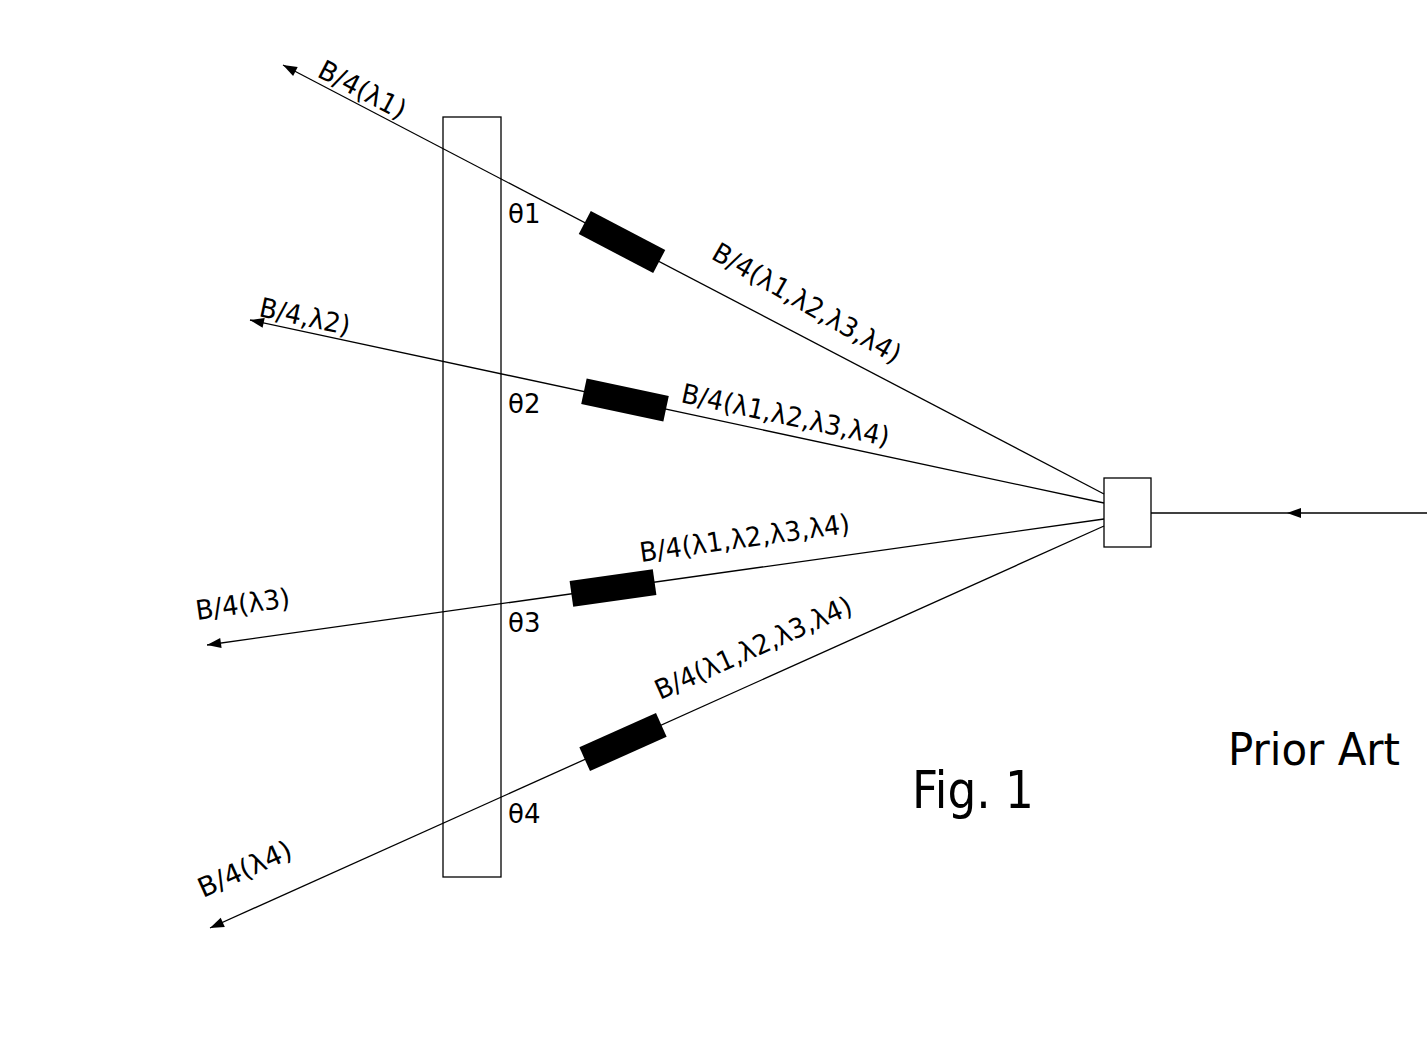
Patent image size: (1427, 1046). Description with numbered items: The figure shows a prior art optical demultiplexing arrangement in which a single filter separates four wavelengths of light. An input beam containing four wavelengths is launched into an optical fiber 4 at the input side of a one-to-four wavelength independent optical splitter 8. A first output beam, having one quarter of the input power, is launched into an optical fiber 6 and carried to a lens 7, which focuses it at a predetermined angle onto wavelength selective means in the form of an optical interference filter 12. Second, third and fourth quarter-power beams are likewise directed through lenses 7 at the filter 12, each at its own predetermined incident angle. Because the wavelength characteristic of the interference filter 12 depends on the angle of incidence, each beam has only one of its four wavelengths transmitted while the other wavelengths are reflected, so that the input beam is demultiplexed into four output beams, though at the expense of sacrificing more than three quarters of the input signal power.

The optical fiber 4 is at (1270, 515).
The optical fiber 6 is at (1023, 563).
The lens 7 is at (630, 237).
The wavelength independent optical splitter 8 is at (1128, 478).
The optical interference filter 12 is at (446, 220).